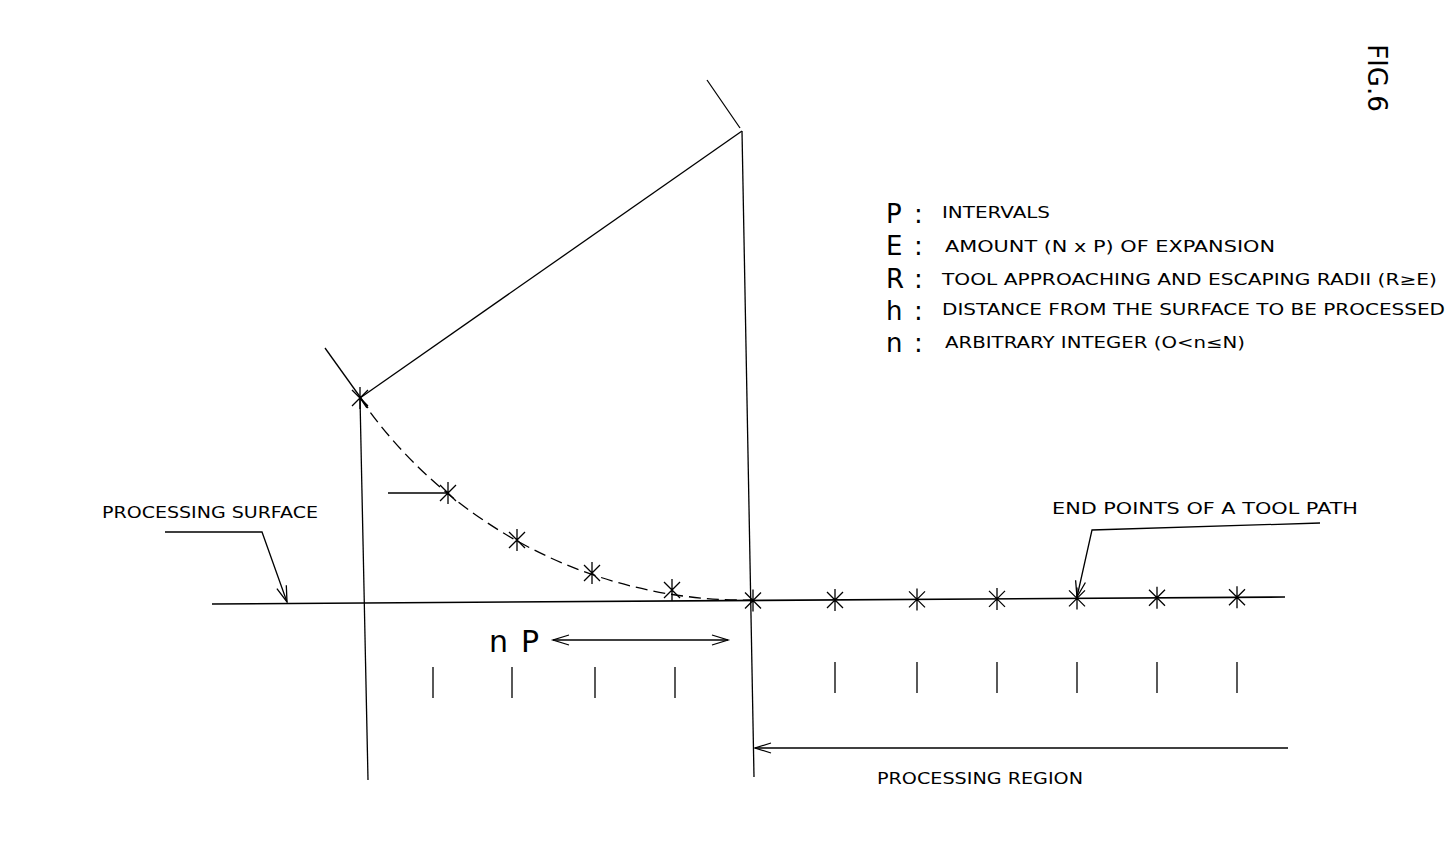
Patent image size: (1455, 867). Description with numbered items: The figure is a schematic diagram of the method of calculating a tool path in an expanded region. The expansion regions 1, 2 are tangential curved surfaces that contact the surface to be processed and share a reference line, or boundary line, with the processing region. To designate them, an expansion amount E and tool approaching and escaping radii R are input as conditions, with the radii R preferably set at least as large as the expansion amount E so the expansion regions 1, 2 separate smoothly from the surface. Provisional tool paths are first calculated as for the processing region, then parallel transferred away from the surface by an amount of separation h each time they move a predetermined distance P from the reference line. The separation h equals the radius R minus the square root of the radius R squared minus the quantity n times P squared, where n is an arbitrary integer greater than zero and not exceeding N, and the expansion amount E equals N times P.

The predetermined distance P is at (754, 682).
The expansion amount E is at (755, 750).
The tool approaching and escaping radii R is at (713, 92).
The amount of separation h is at (405, 495).
The arbitrary integer n is at (454, 474).
The maximum integer N is at (342, 406).
The expansion region 1 is at (669, 572).
The expansion region 2 is at (590, 553).